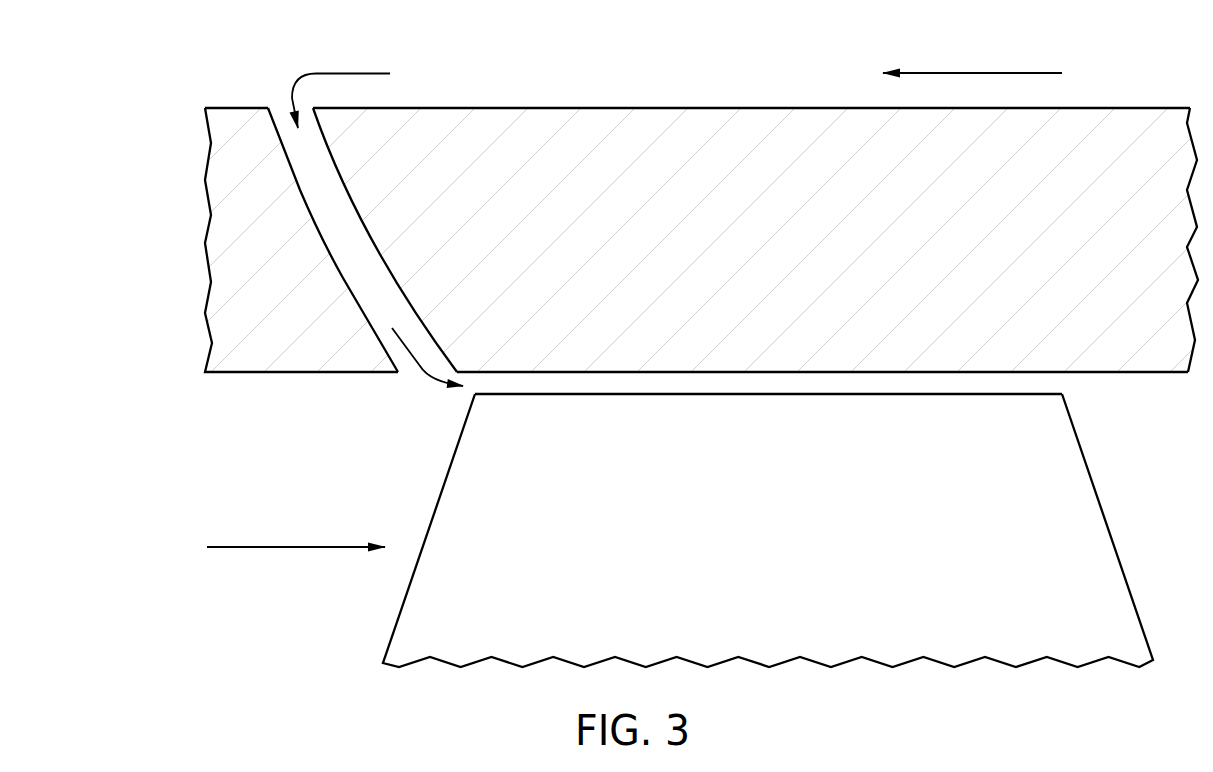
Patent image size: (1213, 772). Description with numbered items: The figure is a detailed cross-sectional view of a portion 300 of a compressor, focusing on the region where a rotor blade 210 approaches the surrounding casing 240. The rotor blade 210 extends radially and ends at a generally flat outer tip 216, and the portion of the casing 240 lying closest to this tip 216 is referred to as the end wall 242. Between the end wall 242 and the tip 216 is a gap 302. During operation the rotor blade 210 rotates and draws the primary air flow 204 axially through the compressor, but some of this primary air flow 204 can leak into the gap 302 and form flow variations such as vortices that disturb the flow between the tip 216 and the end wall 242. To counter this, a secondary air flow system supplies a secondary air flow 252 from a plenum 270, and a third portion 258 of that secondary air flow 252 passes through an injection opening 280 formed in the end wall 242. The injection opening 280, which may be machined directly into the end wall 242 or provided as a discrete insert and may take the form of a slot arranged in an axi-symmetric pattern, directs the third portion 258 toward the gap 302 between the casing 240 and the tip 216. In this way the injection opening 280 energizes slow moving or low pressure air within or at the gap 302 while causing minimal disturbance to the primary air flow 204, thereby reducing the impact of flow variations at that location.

The detailed portion of the compressor 300 is at (155, 193).
The plenum 270 is at (538, 34).
The third portion of the secondary air flow 258 is at (347, 73).
The secondary air flow 252 is at (972, 73).
The casing 240 is at (695, 122).
The injection openings 280 is at (371, 240).
The gap 302 is at (670, 377).
The end wall 242 is at (808, 373).
The tip 216 is at (967, 395).
The rotor blade 210 is at (1090, 508).
The primary air flow 204 is at (305, 546).